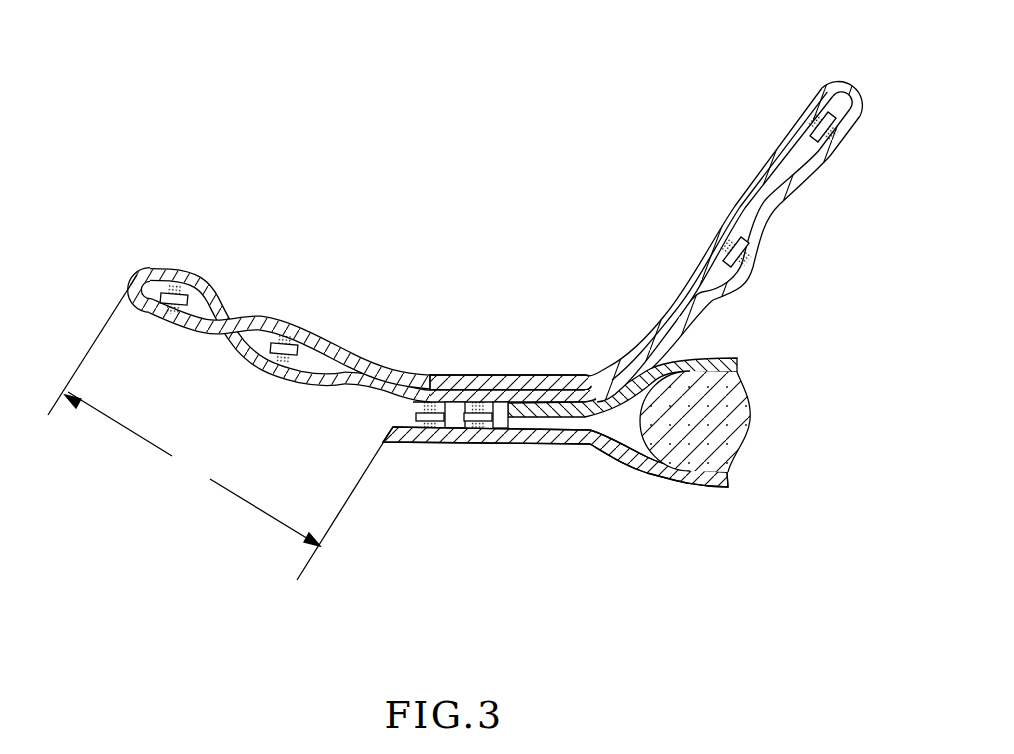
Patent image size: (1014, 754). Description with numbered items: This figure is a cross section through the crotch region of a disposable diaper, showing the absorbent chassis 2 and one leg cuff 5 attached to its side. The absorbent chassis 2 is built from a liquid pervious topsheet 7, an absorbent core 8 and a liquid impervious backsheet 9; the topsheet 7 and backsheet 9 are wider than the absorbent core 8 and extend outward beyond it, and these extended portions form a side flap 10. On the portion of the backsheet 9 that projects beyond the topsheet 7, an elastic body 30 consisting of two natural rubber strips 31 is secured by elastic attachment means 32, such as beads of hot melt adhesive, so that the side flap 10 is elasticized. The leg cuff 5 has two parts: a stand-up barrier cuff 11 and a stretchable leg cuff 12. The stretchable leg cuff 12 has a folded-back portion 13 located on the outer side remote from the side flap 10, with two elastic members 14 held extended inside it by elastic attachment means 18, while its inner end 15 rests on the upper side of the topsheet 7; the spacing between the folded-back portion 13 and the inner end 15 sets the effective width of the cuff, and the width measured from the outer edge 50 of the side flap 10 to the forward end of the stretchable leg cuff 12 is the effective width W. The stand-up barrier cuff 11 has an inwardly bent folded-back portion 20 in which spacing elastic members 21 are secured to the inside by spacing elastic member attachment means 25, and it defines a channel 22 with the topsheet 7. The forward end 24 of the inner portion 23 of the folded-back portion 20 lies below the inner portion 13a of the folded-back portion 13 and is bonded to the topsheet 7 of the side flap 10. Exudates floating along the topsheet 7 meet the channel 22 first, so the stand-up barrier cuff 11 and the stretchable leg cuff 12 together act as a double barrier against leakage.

The absorbent chassis 2 is at (604, 423).
The leg cuff 5 is at (482, 403).
The liquid pervious topsheet 7 is at (697, 363).
The absorbent core 8 is at (741, 418).
The liquid impervious backsheet 9 is at (706, 481).
The side flap 10 is at (537, 437).
The stand-up barrier cuff 11 is at (748, 203).
The stretchable leg cuff 12 is at (347, 317).
The folded-back portion 13 is at (137, 312).
The inner portion 13a is at (500, 380).
The elastic member 14 is at (158, 283).
The inner end 15 is at (583, 374).
The elastic attachment means 18 is at (185, 290).
The folded-back portion 20 is at (851, 82).
The spacing elastic member 21 is at (833, 93).
The channel 22 is at (690, 307).
The inner portion 23 is at (773, 228).
The forward end 24 is at (597, 420).
The spacing elastic member attachment means 25 is at (816, 114).
The elastic body 30 is at (452, 422).
The natural rubber strip 31 is at (417, 416).
The elastic attachment means 32 is at (430, 402).
The outer edge 50 is at (384, 446).